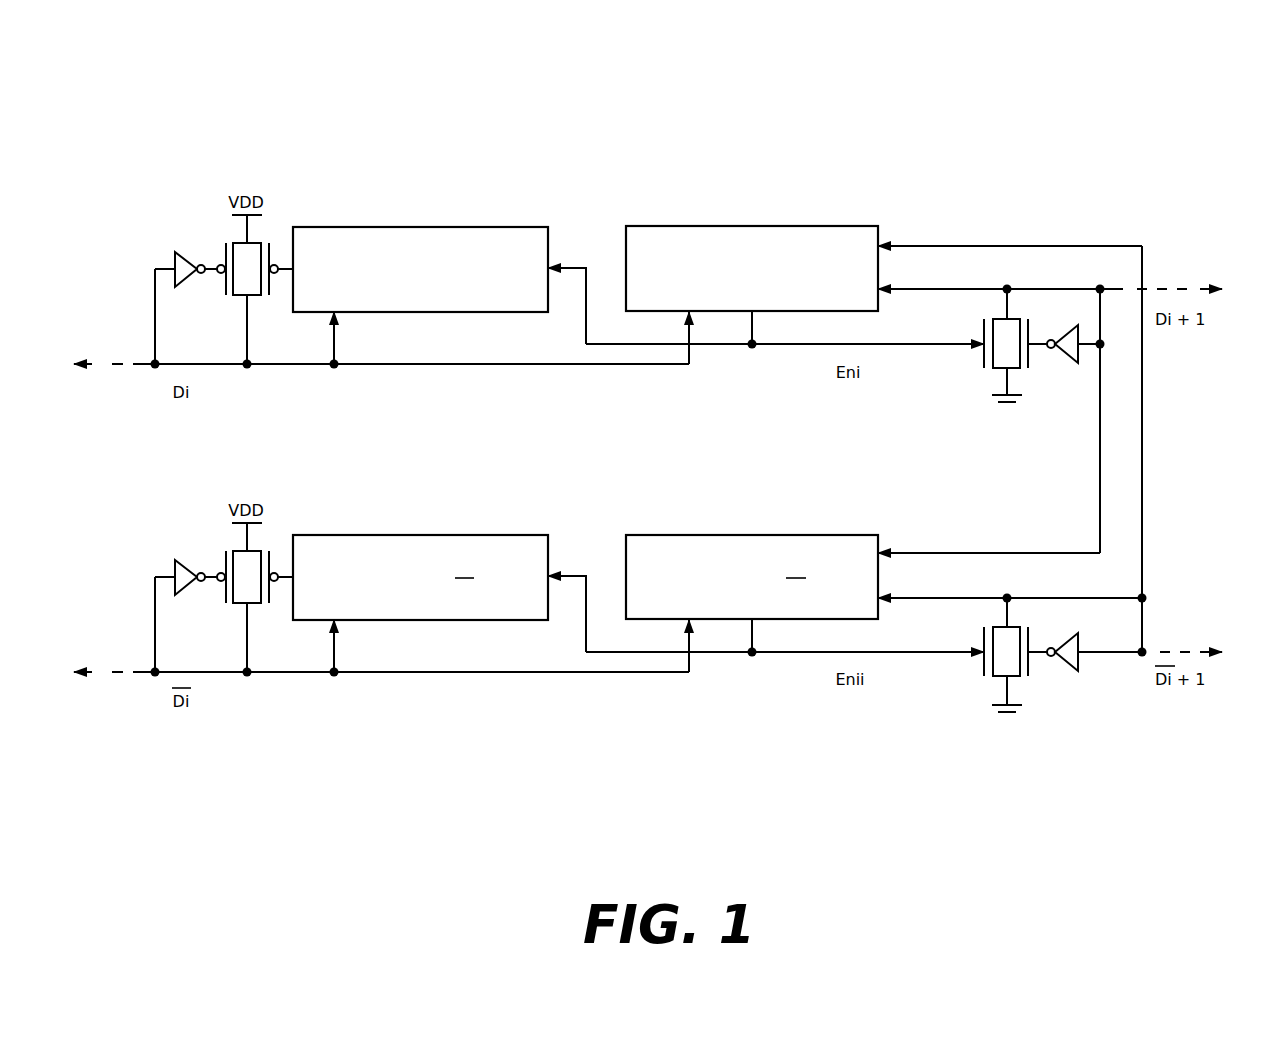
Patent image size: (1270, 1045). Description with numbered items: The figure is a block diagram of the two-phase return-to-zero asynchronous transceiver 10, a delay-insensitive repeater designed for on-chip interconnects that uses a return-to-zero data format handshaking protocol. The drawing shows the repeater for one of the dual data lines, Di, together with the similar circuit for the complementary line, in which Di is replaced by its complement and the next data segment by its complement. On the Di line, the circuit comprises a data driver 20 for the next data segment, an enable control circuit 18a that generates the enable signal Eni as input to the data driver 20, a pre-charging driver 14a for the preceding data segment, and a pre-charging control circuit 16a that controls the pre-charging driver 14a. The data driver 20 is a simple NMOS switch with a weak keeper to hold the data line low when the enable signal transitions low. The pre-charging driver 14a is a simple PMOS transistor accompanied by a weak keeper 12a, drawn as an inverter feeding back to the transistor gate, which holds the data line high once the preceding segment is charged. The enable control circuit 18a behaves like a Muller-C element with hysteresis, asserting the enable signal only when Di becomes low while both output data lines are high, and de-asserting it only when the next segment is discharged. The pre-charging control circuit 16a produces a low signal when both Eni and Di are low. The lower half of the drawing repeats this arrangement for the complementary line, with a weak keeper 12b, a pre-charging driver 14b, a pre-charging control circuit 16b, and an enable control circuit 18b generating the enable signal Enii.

The two-phase return-to-zero asynchronous transceiver 10 is at (1156, 107).
The weak keeper 12a is at (226, 229).
The pre-charging driver 14a is at (270, 229).
The pre-charging control circuit 16a is at (482, 227).
The enable control circuit 18a is at (813, 226).
The weak keeper 12b is at (226, 537).
The pre-charging driver 14b is at (270, 537).
The pre-charging control circuit 16b is at (482, 535).
The enable control circuit 18b is at (813, 535).
The data driver 20 is at (991, 380).